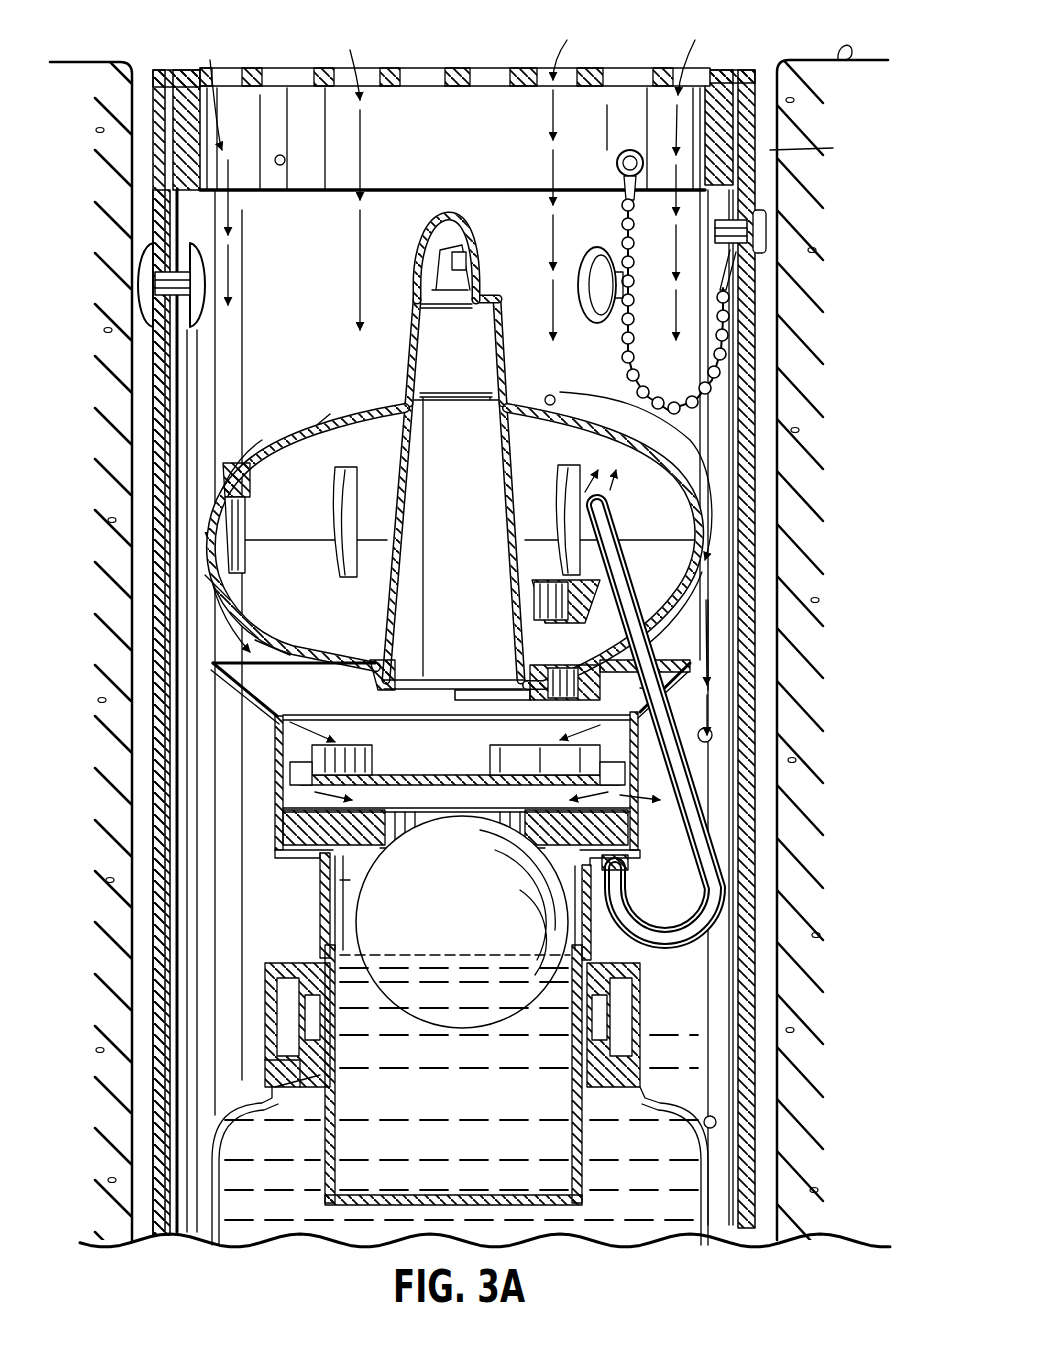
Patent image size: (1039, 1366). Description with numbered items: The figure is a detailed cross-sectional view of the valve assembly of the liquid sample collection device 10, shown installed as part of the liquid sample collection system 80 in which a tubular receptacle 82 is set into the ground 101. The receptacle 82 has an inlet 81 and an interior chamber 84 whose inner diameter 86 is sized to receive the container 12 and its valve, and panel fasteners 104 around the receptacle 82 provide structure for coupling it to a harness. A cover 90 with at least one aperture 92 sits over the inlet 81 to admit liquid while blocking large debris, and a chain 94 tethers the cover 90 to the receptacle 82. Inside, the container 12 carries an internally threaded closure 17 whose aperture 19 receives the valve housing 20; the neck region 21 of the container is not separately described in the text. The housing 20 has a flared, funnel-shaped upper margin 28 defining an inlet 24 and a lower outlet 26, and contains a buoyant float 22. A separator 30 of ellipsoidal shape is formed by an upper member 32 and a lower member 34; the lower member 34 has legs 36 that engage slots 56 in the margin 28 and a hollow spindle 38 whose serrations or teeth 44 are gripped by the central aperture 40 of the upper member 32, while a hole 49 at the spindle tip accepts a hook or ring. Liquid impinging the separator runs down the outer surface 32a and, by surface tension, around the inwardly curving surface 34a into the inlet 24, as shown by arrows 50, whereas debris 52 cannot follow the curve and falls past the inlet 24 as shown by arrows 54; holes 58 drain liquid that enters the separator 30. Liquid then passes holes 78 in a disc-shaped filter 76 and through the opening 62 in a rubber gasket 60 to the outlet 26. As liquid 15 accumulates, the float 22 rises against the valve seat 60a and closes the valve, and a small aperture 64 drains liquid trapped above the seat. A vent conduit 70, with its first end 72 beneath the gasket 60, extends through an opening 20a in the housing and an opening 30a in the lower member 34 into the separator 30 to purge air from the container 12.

The liquid sample collection device 10 is at (396, 262).
The container 12 is at (712, 1238).
The liquid 15 is at (444, 956).
The closure 17 is at (642, 1020).
The aperture 19 is at (320, 944).
The valve housing 20 is at (302, 860).
The opening 20a is at (655, 690).
The neck passage 21 is at (360, 905).
The float 22 is at (494, 908).
The inlet 24 is at (339, 708).
The outlet 26 is at (464, 1202).
The flared funnel-shaped upper margin 28 is at (258, 700).
The separator 30 is at (360, 402).
The opening 30a is at (610, 681).
The upper member 32 is at (320, 424).
The outer surface 32a is at (286, 434).
The lower member 34 is at (282, 632).
The surface 34a is at (225, 592).
The legs 36 is at (598, 664).
The spindle 38 is at (398, 466).
The central aperture 40 is at (506, 402).
The serrations or teeth 44 is at (408, 326).
The hole 49 is at (468, 262).
The arrows 50 is at (222, 627).
The debris 52 is at (286, 161).
The arrows 54 is at (718, 660).
The slots 56 is at (480, 690).
The holes 58 is at (378, 658).
The rubber gasket 60 is at (285, 828).
The valve seat 60a is at (512, 850).
The opening 62 is at (398, 822).
The small aperture 64 is at (630, 812).
The conduit 70 is at (690, 942).
The first end 72 is at (626, 866).
The filter 76 is at (298, 778).
The holes 78 is at (346, 772).
The liquid sample collection system 80 is at (710, 54).
The inlet 81 is at (453, 139).
The receptacle 82 is at (818, 144).
The interior chamber 84 is at (316, 278).
The inner diameter 86 is at (745, 405).
The cover 90 is at (588, 68).
The aperture 92 is at (436, 68).
The chain 94 is at (610, 250).
The ground 101 is at (473, 656).
The panel fasteners 104 is at (136, 286).